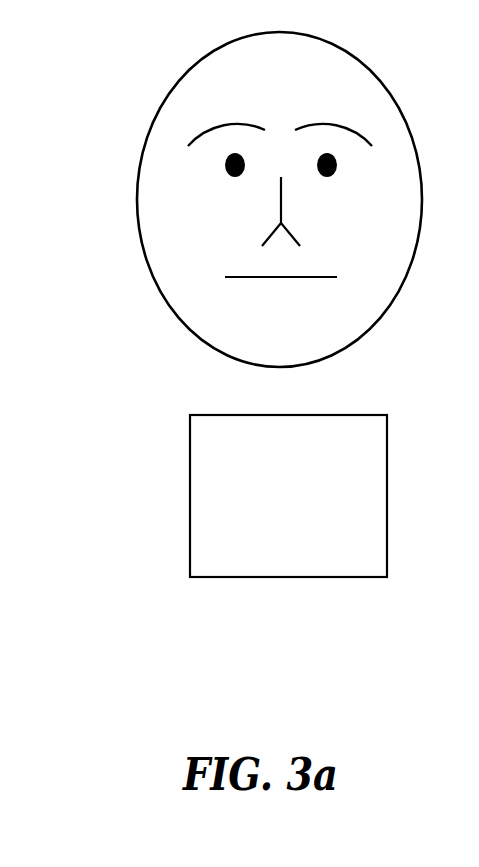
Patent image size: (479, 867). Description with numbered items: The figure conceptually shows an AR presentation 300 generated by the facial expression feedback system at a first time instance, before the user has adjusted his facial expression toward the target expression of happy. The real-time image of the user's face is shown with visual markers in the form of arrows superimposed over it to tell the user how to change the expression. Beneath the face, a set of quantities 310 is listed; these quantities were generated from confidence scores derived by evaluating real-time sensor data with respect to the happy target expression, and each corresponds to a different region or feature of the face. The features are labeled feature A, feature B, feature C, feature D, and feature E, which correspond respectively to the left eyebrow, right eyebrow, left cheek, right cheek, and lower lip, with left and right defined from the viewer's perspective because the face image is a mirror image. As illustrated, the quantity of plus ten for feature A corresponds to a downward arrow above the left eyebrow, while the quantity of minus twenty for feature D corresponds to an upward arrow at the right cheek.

The AR presentation 300 is at (285, 199).
The set of quantities 310 is at (223, 577).
The feature A is at (250, 88).
The feature B is at (315, 88).
The feature C is at (213, 192).
The feature D is at (353, 192).
The feature E is at (278, 287).